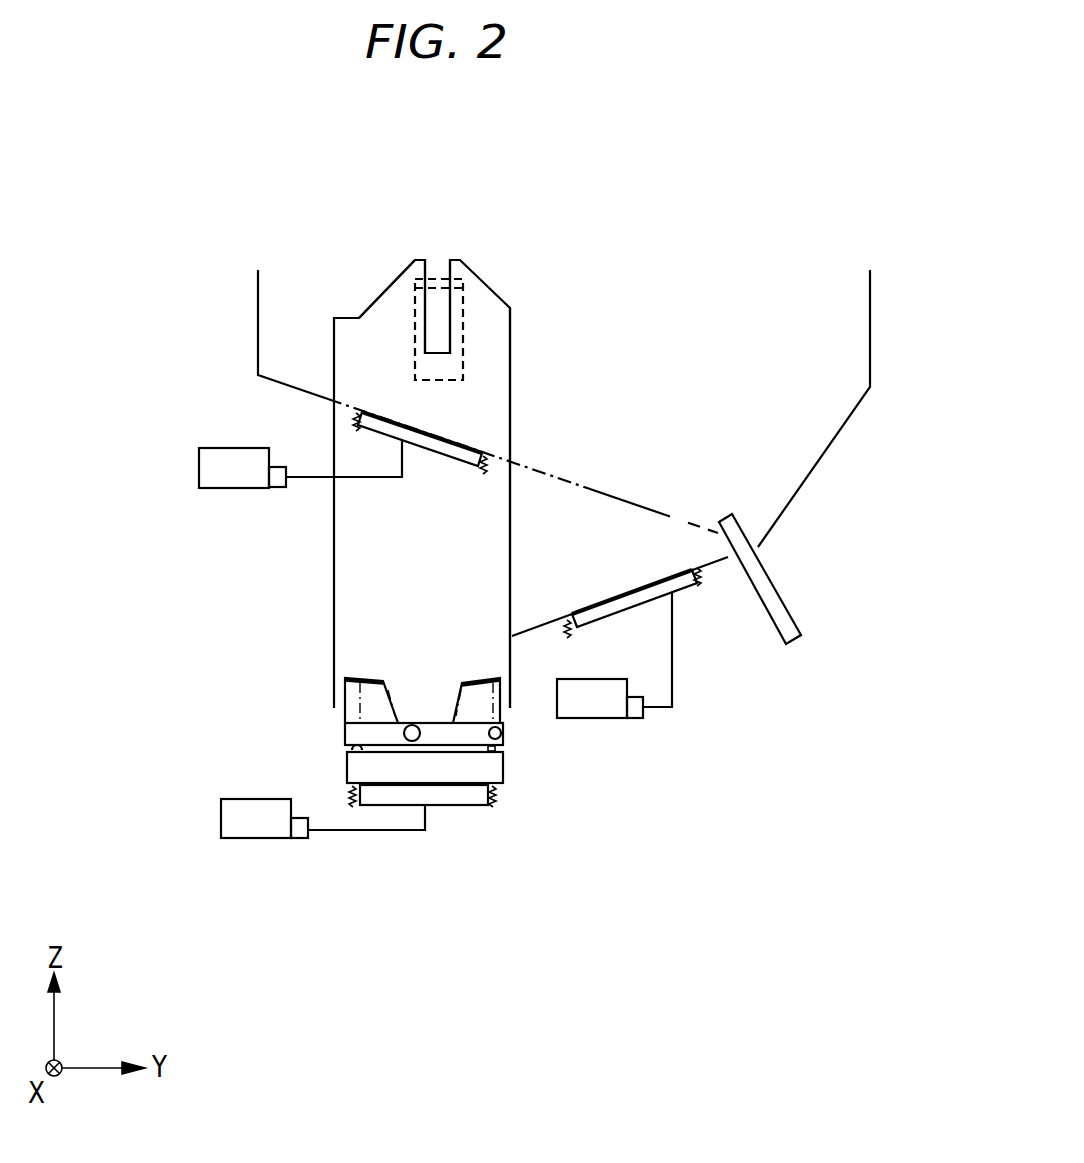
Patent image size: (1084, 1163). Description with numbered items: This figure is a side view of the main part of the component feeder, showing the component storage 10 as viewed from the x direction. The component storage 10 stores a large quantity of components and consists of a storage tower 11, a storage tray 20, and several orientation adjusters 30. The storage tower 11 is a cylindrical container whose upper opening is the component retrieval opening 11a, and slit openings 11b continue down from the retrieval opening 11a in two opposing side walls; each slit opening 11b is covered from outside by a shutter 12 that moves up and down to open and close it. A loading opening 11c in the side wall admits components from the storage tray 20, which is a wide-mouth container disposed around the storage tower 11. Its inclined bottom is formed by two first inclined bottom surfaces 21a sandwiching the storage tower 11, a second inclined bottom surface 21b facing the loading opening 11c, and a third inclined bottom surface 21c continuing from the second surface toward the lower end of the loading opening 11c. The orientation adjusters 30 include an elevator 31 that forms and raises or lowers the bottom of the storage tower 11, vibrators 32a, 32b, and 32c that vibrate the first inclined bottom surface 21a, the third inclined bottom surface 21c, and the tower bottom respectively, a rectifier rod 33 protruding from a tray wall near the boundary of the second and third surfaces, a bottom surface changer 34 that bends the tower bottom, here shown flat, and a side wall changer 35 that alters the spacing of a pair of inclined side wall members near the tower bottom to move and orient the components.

The component storage 10 is at (82, 220).
The storage tower 11 is at (333, 343).
The component retrieval opening 11a is at (378, 295).
The slit opening 11b is at (440, 262).
The loading opening 11c is at (522, 417).
The shutter 12 is at (463, 324).
The storage tray 20 is at (257, 320).
The first inclined bottom surface 21a is at (575, 483).
The second inclined bottom surface 21b is at (825, 450).
The third inclined bottom surface 21c is at (538, 622).
The orientation adjuster 30 is at (488, 630).
The elevator 31 is at (347, 768).
The vibrator 32a is at (198, 468).
The vibrator 32b is at (600, 722).
The vibrator 32c is at (221, 823).
The rectifier rod 33 is at (788, 607).
The bottom surface changer 34 is at (430, 720).
The side wall changer 35 is at (390, 688).